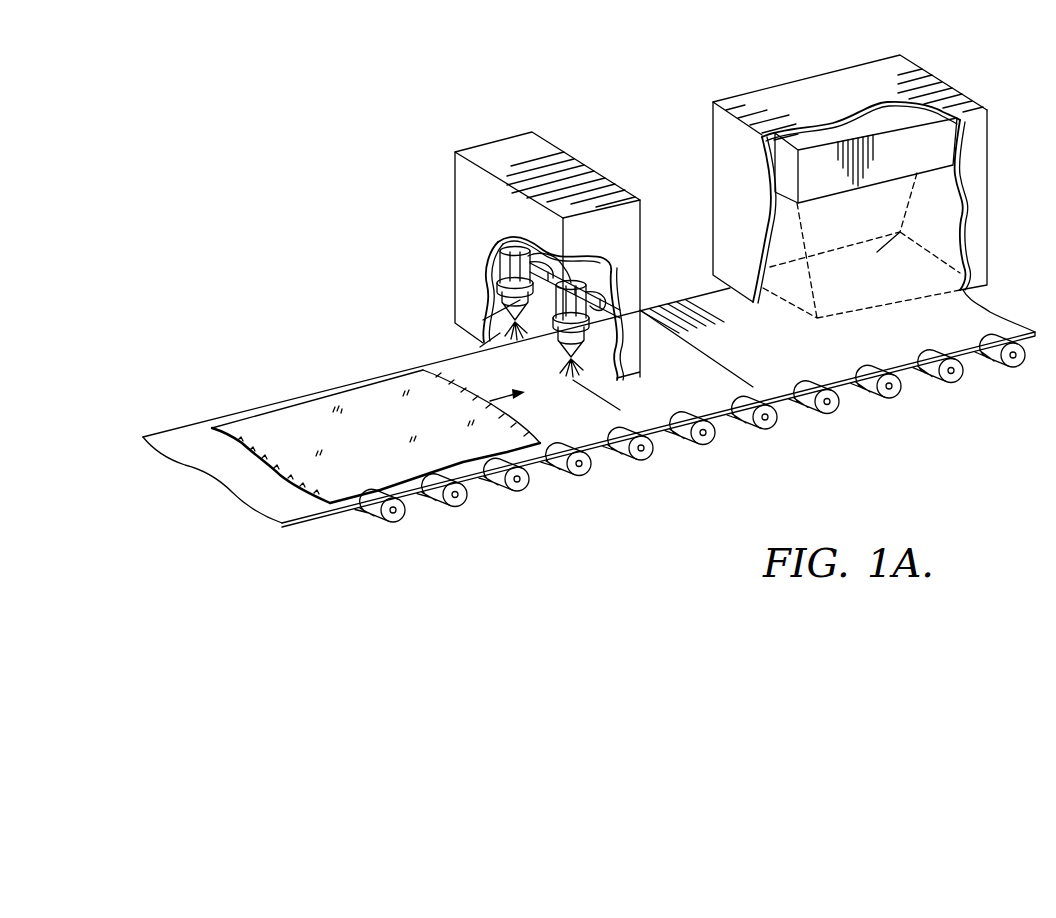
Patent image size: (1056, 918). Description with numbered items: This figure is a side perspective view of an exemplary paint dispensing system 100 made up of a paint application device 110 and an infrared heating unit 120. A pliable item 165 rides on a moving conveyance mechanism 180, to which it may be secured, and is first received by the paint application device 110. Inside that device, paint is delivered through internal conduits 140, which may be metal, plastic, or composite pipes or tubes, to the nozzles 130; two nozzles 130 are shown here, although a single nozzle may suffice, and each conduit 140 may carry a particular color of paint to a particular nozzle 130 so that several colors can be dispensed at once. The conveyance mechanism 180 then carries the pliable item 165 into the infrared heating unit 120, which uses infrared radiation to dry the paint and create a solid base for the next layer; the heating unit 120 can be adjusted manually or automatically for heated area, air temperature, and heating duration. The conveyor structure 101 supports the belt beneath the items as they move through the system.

The paint dispensing system 100 is at (336, 205).
The conveyor belt 101 is at (745, 449).
The paint application device 110 is at (452, 155).
The infrared heating unit 120 is at (843, 184).
The nozzles 130 is at (557, 337).
The internal conduits 140 is at (588, 258).
The pliable item 165 is at (355, 396).
The conveyance mechanism 180 is at (700, 304).